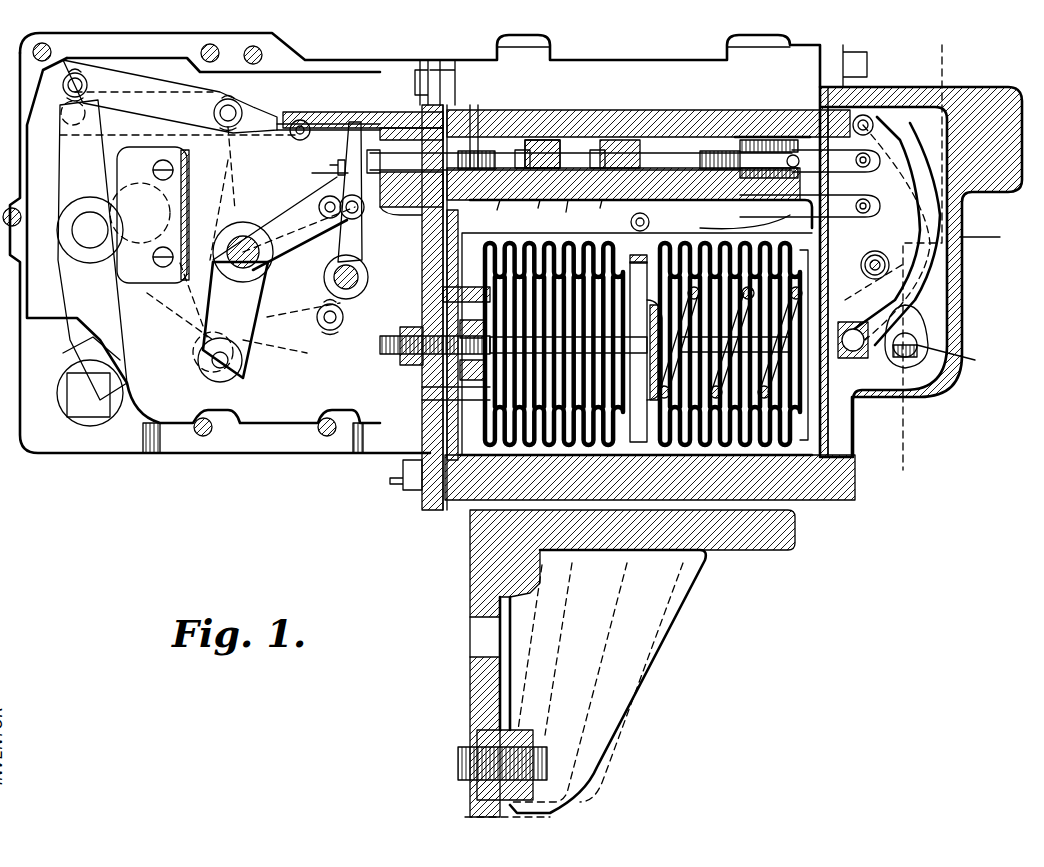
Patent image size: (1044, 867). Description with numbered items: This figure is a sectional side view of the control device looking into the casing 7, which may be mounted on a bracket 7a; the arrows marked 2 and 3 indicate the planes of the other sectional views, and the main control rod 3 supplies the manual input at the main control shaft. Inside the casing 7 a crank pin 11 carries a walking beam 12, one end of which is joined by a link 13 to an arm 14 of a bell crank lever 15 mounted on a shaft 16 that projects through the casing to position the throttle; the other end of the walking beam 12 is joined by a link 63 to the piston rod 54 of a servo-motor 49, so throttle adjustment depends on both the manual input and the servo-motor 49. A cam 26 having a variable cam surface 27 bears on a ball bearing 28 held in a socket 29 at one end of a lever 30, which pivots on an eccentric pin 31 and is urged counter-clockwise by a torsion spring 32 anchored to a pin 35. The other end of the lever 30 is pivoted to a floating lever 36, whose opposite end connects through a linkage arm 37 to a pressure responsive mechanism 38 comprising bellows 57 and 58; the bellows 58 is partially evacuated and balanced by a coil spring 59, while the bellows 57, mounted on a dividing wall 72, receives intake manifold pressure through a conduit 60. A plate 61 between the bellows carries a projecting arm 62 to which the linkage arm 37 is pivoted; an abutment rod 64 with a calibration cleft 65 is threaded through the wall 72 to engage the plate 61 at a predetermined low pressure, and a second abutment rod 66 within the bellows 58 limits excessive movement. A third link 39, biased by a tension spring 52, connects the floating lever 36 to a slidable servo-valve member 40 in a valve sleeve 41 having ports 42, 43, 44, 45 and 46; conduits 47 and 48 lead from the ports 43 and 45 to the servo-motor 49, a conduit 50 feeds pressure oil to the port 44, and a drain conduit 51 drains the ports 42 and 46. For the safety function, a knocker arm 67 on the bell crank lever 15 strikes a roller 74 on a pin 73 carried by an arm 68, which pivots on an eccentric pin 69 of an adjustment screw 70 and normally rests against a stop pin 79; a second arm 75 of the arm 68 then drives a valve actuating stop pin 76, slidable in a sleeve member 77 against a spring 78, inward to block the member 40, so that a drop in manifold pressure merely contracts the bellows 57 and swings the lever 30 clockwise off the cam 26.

The section line 2- 2 is at (50, 45).
The main control rod 3 is at (960, 62).
The casing 7 is at (305, 455).
The bracket 7a is at (718, 550).
The crank pin 11 is at (150, 200).
The walking beam 12 is at (78, 298).
The link 13 is at (145, 345).
The arm of bell crank lever 14 is at (250, 320).
The bell crank lever 15 is at (139, 213).
The shaft 16 is at (243, 241).
The cam 26 is at (958, 359).
The variable cam surface 27 is at (908, 308).
The anti-frictional single ball bearing 28 is at (856, 352).
The socket 29 is at (898, 257).
The lever 30 is at (918, 185).
The eccentric pin 31 is at (868, 255).
The torsion spring 32 is at (890, 280).
The pin 35 is at (980, 238).
The floating lever 36 is at (853, 130).
The linkage arm 37 is at (790, 195).
The pressure responsive mechanism 38 is at (532, 235).
The third link 39 is at (810, 172).
The slidably adjustable member 40 is at (700, 200).
The valve sleeve 41 is at (660, 200).
The port 42 is at (499, 215).
The port 43 is at (537, 213).
The port 44 is at (567, 217).
The port 45 is at (602, 213).
The port 46 is at (624, 227).
The conduit 47 is at (540, 140).
The conduit 48 is at (612, 140).
The servo-motor 49 is at (615, 70).
The conduit 50 is at (530, 660).
The drain conduit 51 is at (665, 178).
The tension spring 52 is at (750, 137).
The piston rod 54 is at (221, 105).
The bellows 57 is at (555, 443).
The bellows 58 is at (700, 443).
The coil spring 59 is at (745, 227).
The conduit 60 is at (430, 400).
The plate 61 is at (640, 442).
The projecting arm 62 is at (681, 310).
The link 63 is at (180, 105).
The abutment rod 64 is at (620, 346).
The cleft 65 is at (429, 352).
The second abutment rod 66 is at (745, 345).
The knocker arm 67 is at (234, 193).
The arm 68 is at (315, 173).
The eccentric pin 69 is at (345, 320).
The adjustment screw 70 is at (368, 277).
The wall 72 is at (432, 390).
The pin 73 is at (364, 212).
The roller 74 is at (367, 192).
The second arm 75 is at (334, 152).
The valve actuating stop pin 76 is at (385, 150).
The sleeve member 77 is at (420, 70).
The spring 78 is at (476, 110).
The stop pin 79 is at (305, 120).